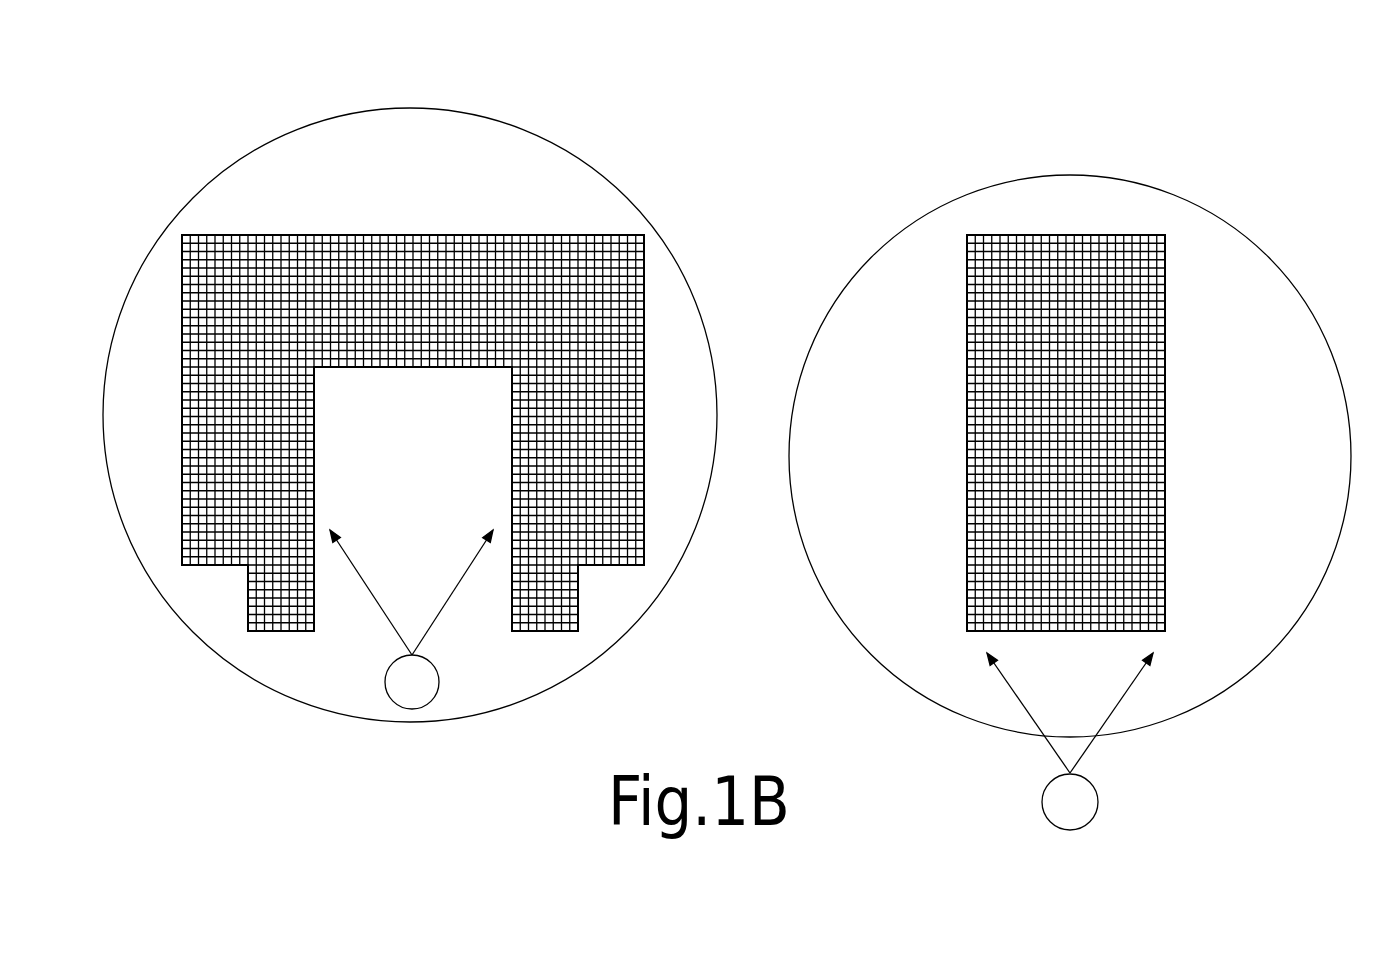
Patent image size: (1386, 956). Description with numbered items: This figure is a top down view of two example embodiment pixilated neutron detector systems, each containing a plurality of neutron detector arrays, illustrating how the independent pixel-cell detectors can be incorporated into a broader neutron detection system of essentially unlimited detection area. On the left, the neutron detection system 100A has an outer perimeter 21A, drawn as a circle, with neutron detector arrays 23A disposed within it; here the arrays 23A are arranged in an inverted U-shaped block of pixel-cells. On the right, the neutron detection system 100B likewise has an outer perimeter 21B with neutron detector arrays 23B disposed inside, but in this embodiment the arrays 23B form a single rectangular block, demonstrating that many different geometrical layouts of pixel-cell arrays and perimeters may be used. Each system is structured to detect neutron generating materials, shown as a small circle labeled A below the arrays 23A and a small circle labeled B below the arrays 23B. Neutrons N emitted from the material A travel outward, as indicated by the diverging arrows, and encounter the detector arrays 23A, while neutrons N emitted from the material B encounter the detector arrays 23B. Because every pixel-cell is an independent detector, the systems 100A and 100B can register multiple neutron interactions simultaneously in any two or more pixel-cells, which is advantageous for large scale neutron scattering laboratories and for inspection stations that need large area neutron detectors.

The neutron detection system 100A is at (212, 160).
The outer perimeter 21A is at (575, 235).
The neutron detector arrays 23A is at (645, 263).
The neutron detection system 100B is at (935, 183).
The outer perimeter 21B is at (1058, 235).
The neutron detector arrays 23B is at (1167, 248).
The emitted neutrons N is at (375, 602).
The neutron generating material A is at (438, 688).
The neutron generating material B is at (1097, 808).